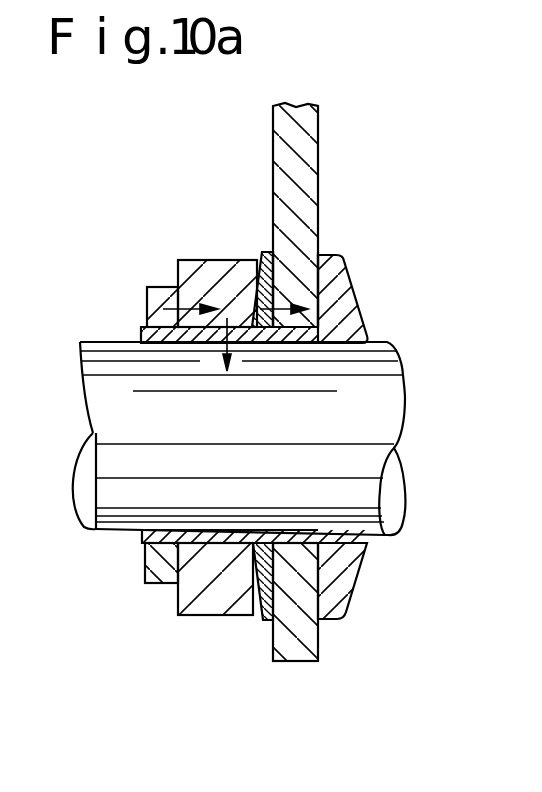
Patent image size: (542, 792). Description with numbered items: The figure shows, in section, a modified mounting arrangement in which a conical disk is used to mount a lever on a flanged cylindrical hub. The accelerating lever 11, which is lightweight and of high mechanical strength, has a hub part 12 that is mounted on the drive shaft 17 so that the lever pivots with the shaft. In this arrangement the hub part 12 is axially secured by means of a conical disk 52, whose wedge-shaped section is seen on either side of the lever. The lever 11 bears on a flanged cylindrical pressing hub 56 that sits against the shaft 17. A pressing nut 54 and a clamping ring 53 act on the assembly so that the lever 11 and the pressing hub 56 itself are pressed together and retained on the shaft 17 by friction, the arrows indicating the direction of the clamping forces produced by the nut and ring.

The accelerating lever 11 is at (307, 148).
The hub part 12 is at (291, 296).
The drive shaft 17 is at (405, 395).
The conical disk 52 is at (260, 263).
The clamping ring 53 is at (220, 275).
The pressing nut 54 is at (147, 287).
The flanged cylindrical pressing hub 56 is at (333, 283).